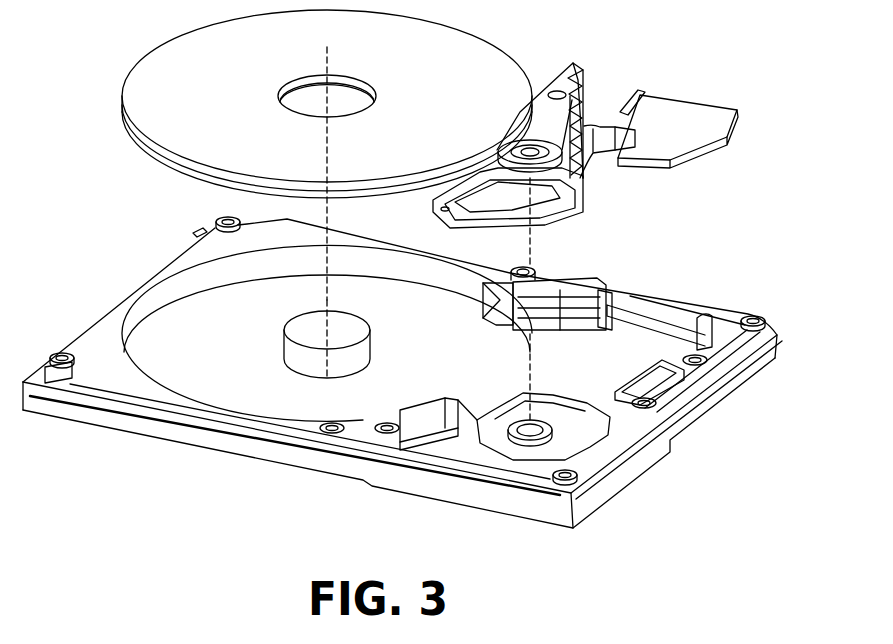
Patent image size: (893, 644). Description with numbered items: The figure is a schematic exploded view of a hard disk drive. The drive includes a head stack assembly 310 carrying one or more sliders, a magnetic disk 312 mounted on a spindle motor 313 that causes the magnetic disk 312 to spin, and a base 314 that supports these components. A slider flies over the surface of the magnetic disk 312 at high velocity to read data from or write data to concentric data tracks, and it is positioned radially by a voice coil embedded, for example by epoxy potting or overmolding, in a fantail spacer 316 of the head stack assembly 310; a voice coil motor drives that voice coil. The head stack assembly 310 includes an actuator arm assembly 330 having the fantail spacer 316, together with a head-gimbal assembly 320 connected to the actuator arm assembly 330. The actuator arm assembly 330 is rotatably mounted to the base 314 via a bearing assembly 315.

The head stack assembly 310 is at (598, 184).
The magnetic disk 312 is at (503, 68).
The spindle motor 313 is at (298, 332).
The base 314 is at (100, 340).
The bearing assembly 315 is at (578, 187).
The fantail spacer 316 is at (538, 217).
The head-gimbal assembly 320 is at (573, 80).
The actuator arm assembly 330 is at (548, 127).